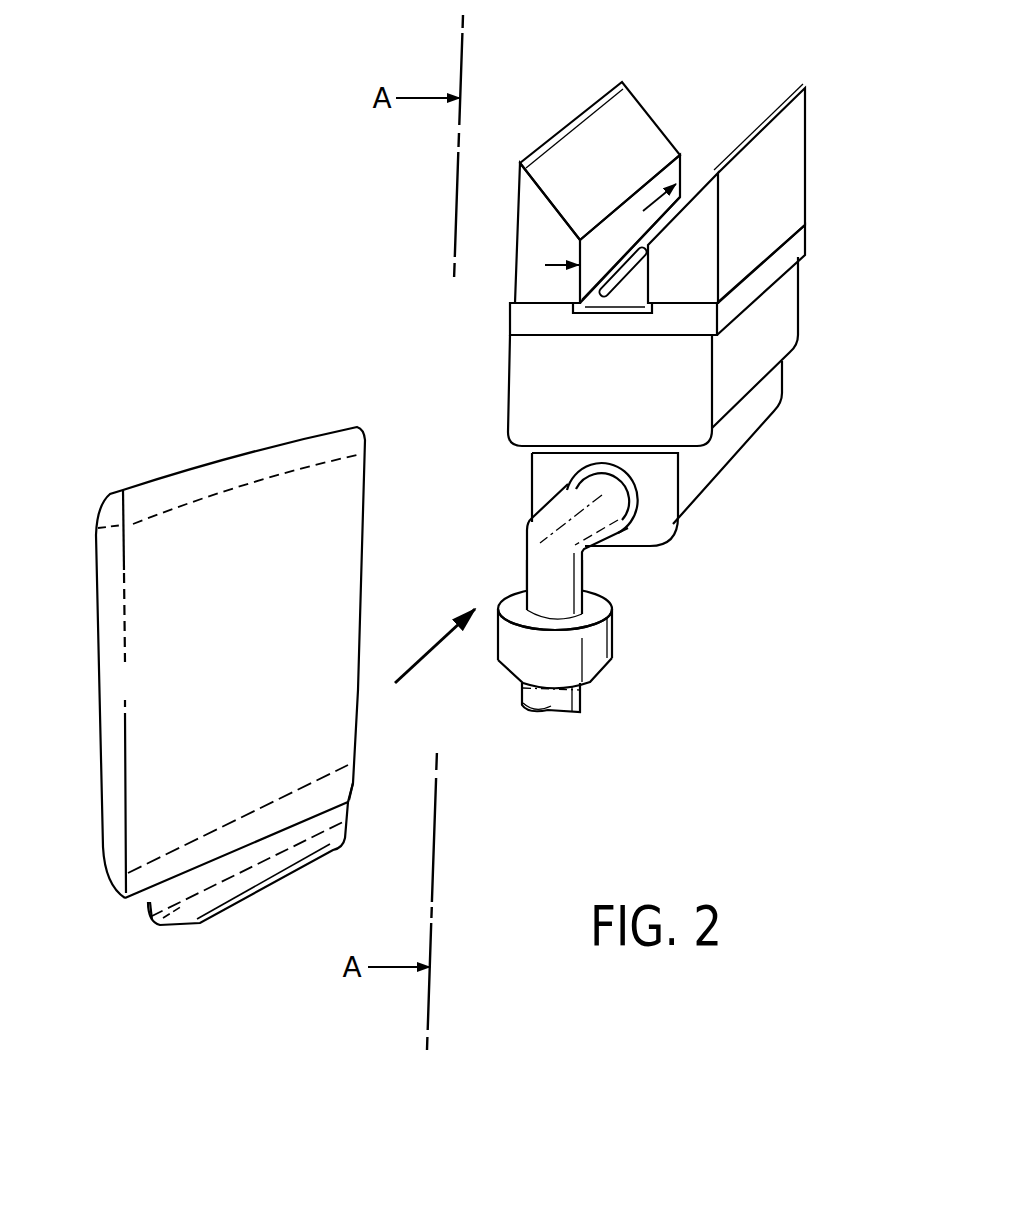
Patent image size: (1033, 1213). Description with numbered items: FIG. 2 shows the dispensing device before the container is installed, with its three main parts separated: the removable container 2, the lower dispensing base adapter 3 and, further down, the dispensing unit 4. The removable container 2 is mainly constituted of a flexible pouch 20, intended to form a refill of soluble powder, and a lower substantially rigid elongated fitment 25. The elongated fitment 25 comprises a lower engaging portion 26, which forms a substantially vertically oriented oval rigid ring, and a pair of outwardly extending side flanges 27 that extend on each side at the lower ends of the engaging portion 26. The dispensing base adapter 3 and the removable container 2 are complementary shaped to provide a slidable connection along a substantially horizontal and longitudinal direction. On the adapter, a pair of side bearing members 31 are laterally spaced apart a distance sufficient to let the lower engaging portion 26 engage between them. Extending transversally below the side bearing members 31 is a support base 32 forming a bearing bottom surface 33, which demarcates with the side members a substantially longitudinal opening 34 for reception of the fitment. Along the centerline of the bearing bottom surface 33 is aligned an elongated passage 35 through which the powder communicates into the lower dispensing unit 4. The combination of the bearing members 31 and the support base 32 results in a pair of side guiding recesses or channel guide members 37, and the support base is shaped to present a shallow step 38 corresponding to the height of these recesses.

The removable container 2 is at (82, 664).
The flexible pouch 20 is at (340, 517).
The elongated fitment 25 is at (157, 915).
The lower engaging portion 26 is at (268, 868).
The side flanges 27 is at (329, 852).
The dispensing base adapter 3 is at (835, 71).
The side bearing members 31 is at (642, 93).
The support base 32 is at (503, 299).
The bearing bottom surface 33 is at (588, 298).
The longitudinal opening 34 is at (697, 157).
The elongated passage 35 is at (651, 268).
The channel guide members 37 is at (613, 307).
The shallow step 38 is at (603, 123).
The dispensing unit 4 is at (733, 474).